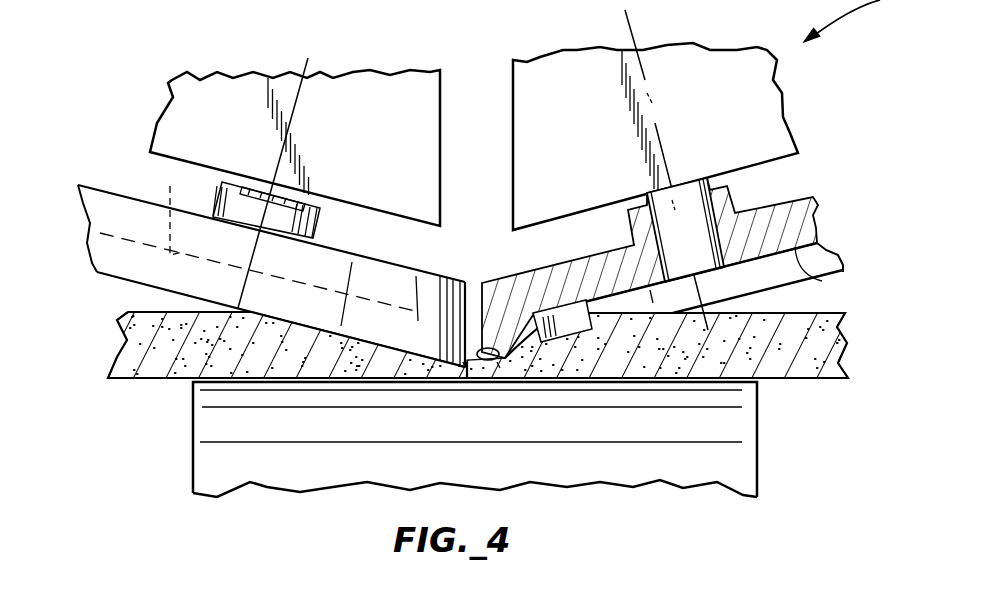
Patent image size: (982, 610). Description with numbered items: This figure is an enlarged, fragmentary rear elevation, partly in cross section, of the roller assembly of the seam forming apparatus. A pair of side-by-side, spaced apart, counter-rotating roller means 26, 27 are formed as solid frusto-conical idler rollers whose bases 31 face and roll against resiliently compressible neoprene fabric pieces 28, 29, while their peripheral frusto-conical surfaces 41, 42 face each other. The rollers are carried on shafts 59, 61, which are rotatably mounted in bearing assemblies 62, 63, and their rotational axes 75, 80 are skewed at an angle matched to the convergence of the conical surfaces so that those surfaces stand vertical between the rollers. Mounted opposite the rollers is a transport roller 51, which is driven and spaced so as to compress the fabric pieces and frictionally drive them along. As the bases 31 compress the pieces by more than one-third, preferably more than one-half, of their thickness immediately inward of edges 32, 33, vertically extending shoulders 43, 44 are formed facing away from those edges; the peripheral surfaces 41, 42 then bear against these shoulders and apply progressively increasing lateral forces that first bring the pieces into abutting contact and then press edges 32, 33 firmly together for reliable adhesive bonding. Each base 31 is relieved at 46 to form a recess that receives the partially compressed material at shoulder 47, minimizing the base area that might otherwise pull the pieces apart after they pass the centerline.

The roller means 26 is at (100, 186).
The roller means 27 is at (808, 197).
The fabric piece 28 is at (150, 312).
The fabric piece 29 is at (816, 313).
The base 31 is at (105, 274).
The edge 32 is at (484, 362).
The edge 33 is at (460, 368).
The peripheral frusto-conical surface 41 is at (474, 283).
The peripheral frusto-conical surface 42 is at (484, 284).
The shoulder 43 is at (450, 358).
The shoulder 44 is at (500, 366).
The relief 46 is at (170, 186).
The shoulder 47 is at (572, 313).
The transport roller 51 is at (192, 423).
The shaft 59 is at (266, 182).
The shaft 61 is at (687, 183).
The bearing assembly 62 is at (347, 89).
The bearing assembly 63 is at (572, 58).
The axis 75 is at (300, 60).
The axis 80 is at (637, 28).